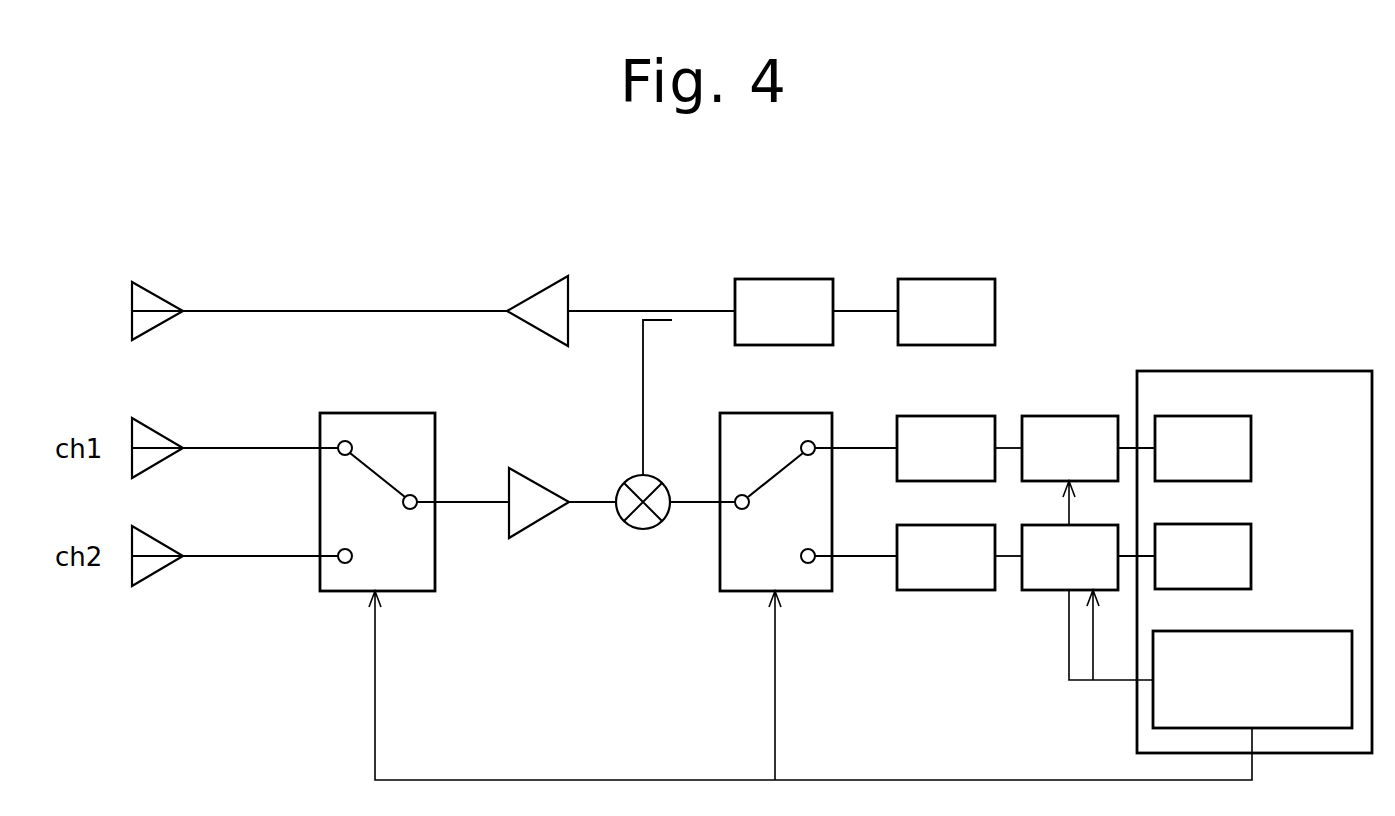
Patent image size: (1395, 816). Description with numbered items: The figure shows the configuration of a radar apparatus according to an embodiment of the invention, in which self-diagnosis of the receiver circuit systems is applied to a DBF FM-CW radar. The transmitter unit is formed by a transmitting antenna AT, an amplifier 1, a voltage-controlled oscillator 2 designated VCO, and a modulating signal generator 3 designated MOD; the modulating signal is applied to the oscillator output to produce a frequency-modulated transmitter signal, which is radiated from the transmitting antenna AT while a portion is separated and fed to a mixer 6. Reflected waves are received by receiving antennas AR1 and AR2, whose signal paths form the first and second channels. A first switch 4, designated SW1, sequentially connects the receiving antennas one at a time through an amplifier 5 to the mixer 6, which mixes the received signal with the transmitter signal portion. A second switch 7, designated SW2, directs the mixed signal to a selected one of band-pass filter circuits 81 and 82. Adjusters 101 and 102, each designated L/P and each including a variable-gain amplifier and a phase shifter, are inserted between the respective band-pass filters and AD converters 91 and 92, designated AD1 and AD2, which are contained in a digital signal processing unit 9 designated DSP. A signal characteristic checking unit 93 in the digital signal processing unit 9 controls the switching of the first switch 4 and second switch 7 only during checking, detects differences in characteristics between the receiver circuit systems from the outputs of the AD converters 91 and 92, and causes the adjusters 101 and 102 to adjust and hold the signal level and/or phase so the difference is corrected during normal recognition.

The transmitting antenna AT is at (167, 296).
The receiving antenna AR1 is at (148, 424).
The receiving antenna AR2 is at (162, 536).
The amplifier 1 is at (537, 292).
The voltage-controlled oscillator 2 is at (785, 279).
The modulating signal generator 3 is at (950, 279).
The first switch 4 is at (381, 413).
The amplifier 5 is at (545, 486).
The mixer 6 is at (642, 530).
The second switch 7 is at (777, 413).
The band-pass filter circuit 81 is at (963, 416).
The band-pass filter circuit 82 is at (961, 590).
The adjuster 101 is at (1065, 416).
The adjuster 102 is at (1040, 590).
The digital signal processing unit 9 is at (1293, 371).
The AD converter 91 is at (1251, 450).
The AD converter 92 is at (1251, 558).
The signal characteristic checking unit 93 is at (1267, 631).